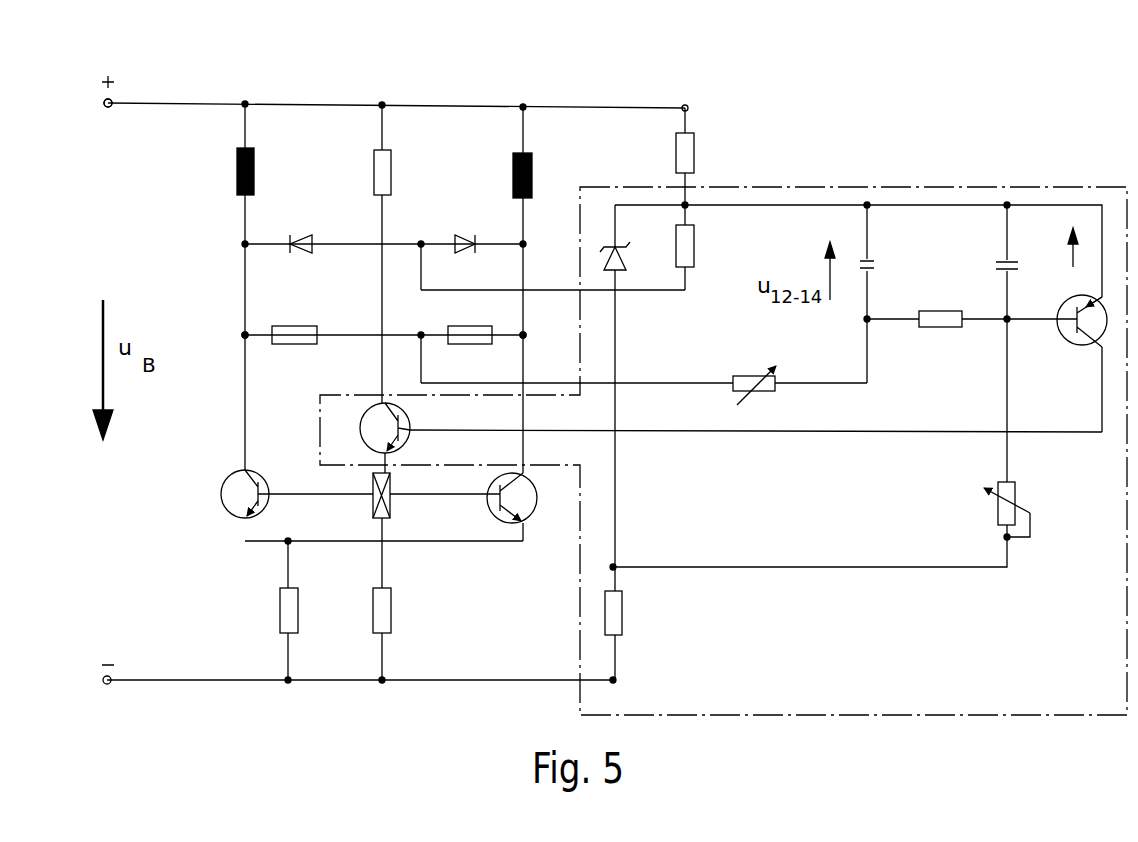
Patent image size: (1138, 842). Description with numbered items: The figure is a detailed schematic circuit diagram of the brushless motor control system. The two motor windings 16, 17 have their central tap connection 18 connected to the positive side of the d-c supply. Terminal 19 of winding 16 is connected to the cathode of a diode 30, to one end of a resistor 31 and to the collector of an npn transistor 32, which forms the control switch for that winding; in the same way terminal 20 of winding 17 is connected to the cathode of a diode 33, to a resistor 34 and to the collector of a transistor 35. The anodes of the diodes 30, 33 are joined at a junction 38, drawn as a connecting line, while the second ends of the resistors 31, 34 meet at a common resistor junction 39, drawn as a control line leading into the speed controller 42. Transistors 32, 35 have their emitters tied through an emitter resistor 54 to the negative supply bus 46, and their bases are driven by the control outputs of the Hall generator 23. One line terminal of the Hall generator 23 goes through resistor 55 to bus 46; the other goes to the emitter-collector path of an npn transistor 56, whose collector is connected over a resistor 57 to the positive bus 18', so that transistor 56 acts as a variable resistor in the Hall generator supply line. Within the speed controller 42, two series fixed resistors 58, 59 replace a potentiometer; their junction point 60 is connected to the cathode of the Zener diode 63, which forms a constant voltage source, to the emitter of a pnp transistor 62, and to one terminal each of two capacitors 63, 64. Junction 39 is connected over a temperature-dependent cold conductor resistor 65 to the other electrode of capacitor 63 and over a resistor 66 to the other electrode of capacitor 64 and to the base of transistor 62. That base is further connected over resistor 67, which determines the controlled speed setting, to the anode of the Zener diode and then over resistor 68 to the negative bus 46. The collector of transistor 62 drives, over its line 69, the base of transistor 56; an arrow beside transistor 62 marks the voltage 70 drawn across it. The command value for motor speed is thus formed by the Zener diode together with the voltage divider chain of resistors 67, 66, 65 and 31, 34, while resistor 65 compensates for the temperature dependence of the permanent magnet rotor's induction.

The winding 16 is at (237, 172).
The winding 17 is at (513, 177).
The central tap connection 18 is at (396, 85).
The positive bus 18' is at (124, 123).
The terminal of winding 16 19 is at (245, 334).
The terminal of winding 17 20 is at (522, 334).
The Hall generator 23 is at (400, 478).
The diode 30 is at (304, 238).
The resistor 31 is at (292, 336).
The npn transistor 32 is at (258, 480).
The diode 33 is at (460, 238).
The resistor 34 is at (470, 344).
The transistor 35 is at (546, 485).
The junction 38 is at (665, 291).
The common resistor junction 39 is at (665, 380).
The speed controller 42 is at (1024, 189).
The negative supply bus 46 is at (233, 680).
The emitter resistor 54 is at (296, 621).
The resistor 55 is at (390, 621).
The npn transistor 56 is at (406, 426).
The resistor 57 is at (374, 172).
The fixed resistor 58 is at (690, 158).
The fixed resistor 59 is at (690, 252).
The junction point 60 is at (686, 207).
The pnp transistor 62 is at (1058, 341).
The Zener diode / capacitor 63 is at (627, 255).
The capacitor 64 is at (996, 266).
The cold conductor (PTC) resistor 65 is at (741, 378).
The resistor 66 is at (940, 328).
The resistor 67 is at (1000, 500).
The resistor 68 is at (622, 619).
The line 69 is at (836, 427).
The voltage u70 70 is at (1076, 261).